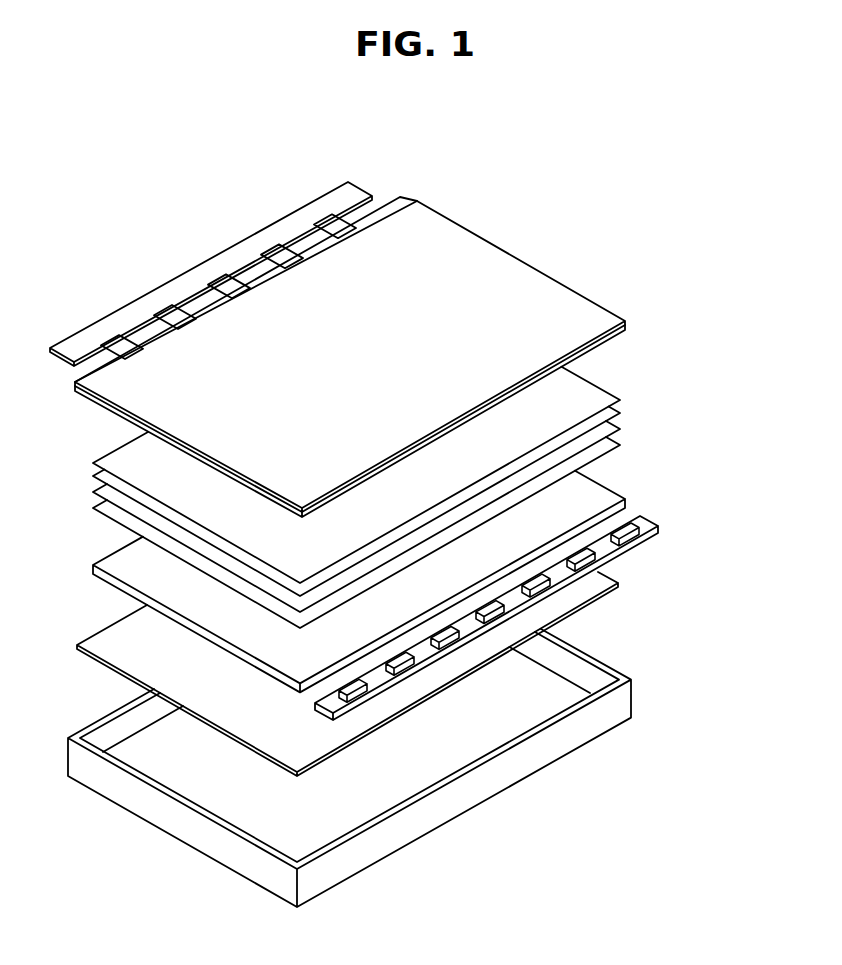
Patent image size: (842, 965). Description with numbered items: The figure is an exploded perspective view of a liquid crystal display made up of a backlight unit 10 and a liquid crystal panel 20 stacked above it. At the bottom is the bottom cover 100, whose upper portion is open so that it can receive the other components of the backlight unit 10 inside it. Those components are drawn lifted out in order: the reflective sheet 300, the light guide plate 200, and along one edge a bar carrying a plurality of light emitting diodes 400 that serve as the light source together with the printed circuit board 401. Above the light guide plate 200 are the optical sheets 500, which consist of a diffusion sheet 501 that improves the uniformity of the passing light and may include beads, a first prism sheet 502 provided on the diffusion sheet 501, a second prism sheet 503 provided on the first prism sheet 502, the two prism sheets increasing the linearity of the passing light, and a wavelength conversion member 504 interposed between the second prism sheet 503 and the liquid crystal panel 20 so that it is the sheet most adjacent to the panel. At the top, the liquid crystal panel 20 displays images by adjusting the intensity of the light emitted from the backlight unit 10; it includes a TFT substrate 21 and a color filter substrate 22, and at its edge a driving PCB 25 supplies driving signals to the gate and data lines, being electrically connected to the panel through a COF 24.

The backlight unit 10 is at (740, 398).
The liquid crystal panel 20 is at (470, 157).
The TFT substrate 21 is at (400, 196).
The color filter substrate 22 is at (437, 213).
The COF (Chip on Film) 24 is at (323, 219).
The driving PCB 25 is at (85, 342).
The bottom cover 100 is at (632, 698).
The light guide plate 200 is at (606, 494).
The reflective sheet 300 is at (611, 580).
The light emitting diodes 400 is at (630, 532).
The printed circuit board 401 is at (642, 524).
The optical sheets 500 is at (690, 372).
The diffusion sheet 501 is at (620, 445).
The first prism sheet 502 is at (620, 429).
The second prism sheet 503 is at (620, 413).
The wavelength conversion member 504 is at (620, 400).